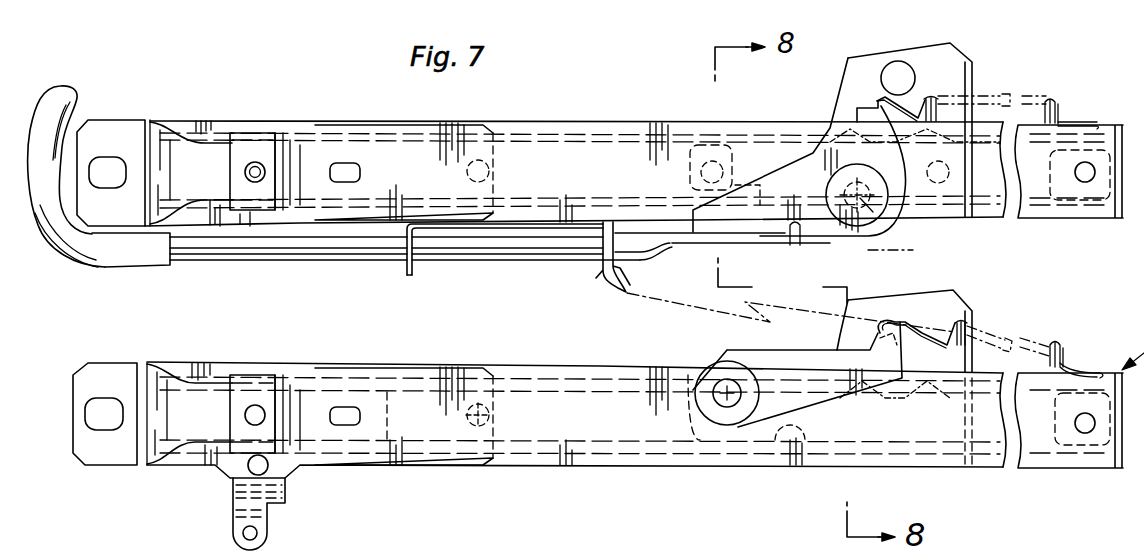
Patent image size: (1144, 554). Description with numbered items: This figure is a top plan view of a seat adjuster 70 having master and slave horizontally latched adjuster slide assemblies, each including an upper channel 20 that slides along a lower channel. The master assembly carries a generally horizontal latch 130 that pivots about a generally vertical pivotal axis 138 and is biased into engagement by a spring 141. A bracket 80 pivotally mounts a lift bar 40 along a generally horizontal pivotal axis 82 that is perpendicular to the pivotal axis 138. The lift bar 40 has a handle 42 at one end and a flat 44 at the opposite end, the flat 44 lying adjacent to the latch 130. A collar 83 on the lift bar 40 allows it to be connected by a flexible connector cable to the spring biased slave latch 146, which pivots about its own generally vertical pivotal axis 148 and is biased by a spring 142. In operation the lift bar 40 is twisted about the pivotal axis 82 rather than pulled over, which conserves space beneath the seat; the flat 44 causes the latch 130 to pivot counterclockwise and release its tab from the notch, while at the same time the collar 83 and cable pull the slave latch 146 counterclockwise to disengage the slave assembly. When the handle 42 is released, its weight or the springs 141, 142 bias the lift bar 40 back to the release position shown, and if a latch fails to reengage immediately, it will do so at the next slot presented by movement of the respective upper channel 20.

The seat adjuster 70 is at (195, 112).
The upper channel 20 is at (820, 463).
The handle 42 is at (60, 240).
The lift bar 40 is at (240, 252).
The bracket 80 is at (403, 263).
The collar 83 is at (617, 248).
The flat 44 is at (707, 245).
The pivotal axis 138 is at (878, 220).
The latch 130 is at (868, 234).
The pivotal axis 82 is at (913, 250).
The spring 141 is at (1055, 100).
The spring 142 is at (1060, 345).
The slave latch 146 is at (747, 352).
The pivotal axis 148 is at (722, 388).